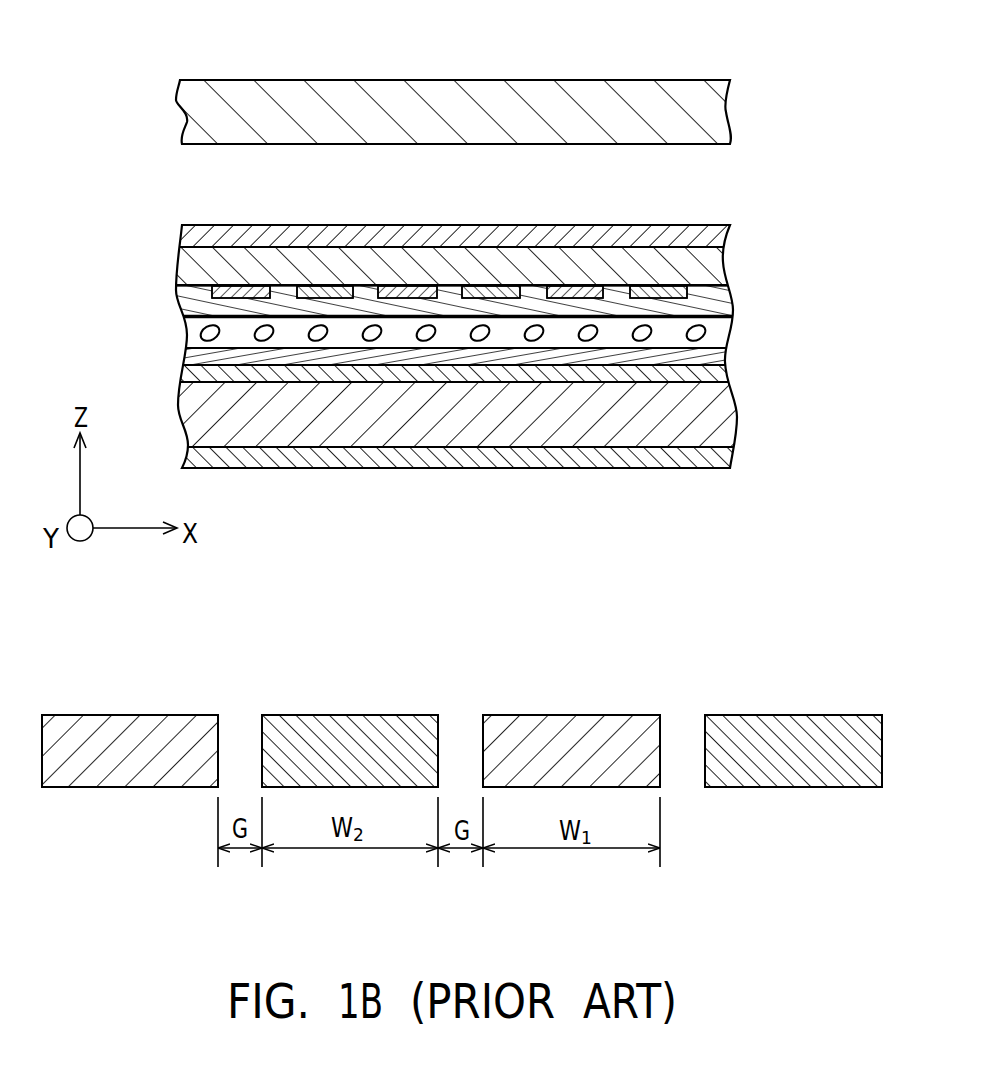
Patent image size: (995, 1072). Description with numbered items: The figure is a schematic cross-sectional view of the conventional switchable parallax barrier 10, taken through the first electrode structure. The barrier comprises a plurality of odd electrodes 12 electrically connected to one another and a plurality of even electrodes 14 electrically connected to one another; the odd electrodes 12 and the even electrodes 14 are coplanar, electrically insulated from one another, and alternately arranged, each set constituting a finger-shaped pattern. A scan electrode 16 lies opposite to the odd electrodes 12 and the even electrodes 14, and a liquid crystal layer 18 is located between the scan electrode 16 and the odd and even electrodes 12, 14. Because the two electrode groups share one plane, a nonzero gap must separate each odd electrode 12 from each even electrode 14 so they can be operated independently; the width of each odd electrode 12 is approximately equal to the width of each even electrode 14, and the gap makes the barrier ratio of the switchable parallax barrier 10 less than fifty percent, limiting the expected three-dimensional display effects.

The switchable parallax barrier 10 is at (700, 270).
The odd electrodes 12 is at (247, 289).
The even electrodes 14 is at (327, 289).
The scan electrode 16 is at (718, 357).
The liquid crystal layer 18 is at (725, 328).